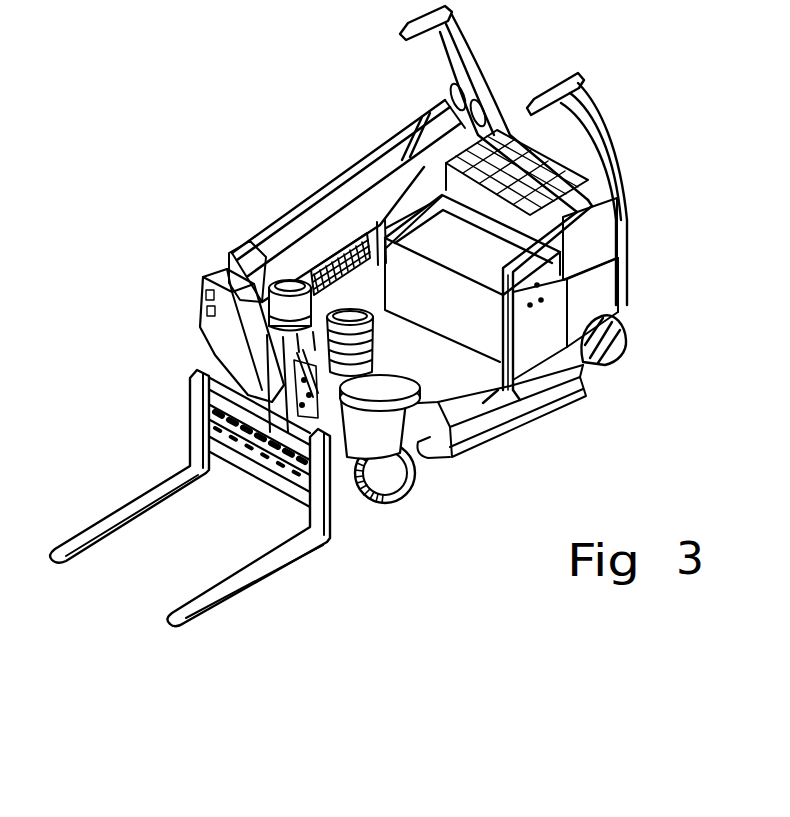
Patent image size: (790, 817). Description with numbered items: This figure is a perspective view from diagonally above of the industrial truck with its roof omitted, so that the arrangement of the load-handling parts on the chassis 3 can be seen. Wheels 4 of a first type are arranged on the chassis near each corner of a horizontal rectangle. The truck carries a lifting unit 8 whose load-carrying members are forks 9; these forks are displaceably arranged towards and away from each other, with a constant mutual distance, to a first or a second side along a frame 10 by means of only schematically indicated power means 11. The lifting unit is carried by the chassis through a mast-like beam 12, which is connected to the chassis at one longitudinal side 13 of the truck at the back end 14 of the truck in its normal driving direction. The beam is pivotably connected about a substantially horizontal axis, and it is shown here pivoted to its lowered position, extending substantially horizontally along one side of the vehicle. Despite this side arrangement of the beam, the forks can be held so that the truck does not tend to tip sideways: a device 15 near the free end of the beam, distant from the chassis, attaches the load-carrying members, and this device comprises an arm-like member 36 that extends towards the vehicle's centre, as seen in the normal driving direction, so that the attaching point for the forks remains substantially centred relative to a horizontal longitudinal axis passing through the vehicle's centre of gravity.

The chassis 3 is at (520, 390).
The wheels of a first type 4 is at (413, 486).
The lifting unit 8 is at (195, 357).
The forks 9 is at (277, 566).
The frame 10 is at (253, 476).
The power means 11 is at (207, 442).
The mast-like beam 12 is at (290, 222).
The longitudinal side 13 is at (363, 173).
The back end 14 is at (511, 133).
The attaching device 15 is at (335, 441).
The arm-like member 36 is at (203, 325).